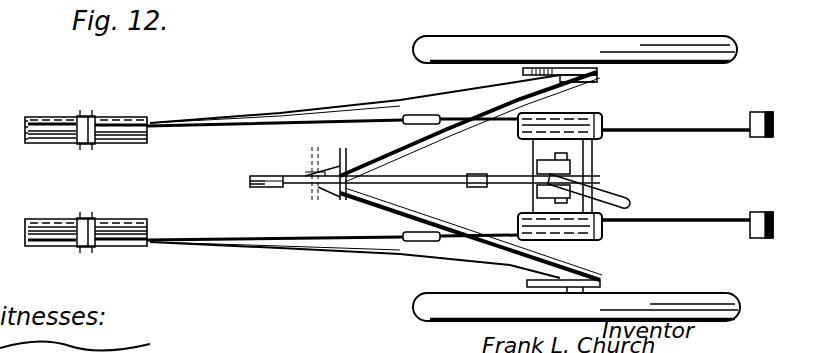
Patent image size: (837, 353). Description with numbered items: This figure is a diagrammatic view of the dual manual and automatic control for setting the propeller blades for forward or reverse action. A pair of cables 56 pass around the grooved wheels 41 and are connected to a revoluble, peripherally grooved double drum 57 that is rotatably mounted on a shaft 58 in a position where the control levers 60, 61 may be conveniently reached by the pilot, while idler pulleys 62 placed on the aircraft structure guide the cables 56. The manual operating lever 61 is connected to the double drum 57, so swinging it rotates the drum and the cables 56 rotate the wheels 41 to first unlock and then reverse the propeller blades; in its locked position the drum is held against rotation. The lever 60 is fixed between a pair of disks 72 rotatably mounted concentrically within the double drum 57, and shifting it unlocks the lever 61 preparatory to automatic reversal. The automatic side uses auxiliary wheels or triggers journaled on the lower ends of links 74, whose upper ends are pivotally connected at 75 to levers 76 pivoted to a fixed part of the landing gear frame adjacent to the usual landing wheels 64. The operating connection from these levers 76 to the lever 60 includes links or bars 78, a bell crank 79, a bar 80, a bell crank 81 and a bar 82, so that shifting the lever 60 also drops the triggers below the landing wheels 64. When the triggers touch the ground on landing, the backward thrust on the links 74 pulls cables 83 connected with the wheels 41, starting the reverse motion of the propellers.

The wheels 41 is at (45, 218).
The cables 56 is at (350, 122).
The double drum 57 is at (602, 240).
The shaft 58 is at (560, 114).
The lever 60 is at (469, 194).
The manual operating lever 61 is at (597, 190).
The idler pulleys 62 is at (88, 217).
The landing wheels 64 is at (732, 45).
The disks 72 is at (568, 163).
The links 74 is at (600, 78).
The pivotal connection 75 is at (598, 83).
The levers 76 is at (543, 182).
The links or bars 78 is at (478, 108).
The bell crank 79 is at (348, 182).
The bar 80 is at (268, 176).
The bell crank 81 is at (265, 188).
The bar 82 is at (441, 167).
The cables 83 is at (327, 108).